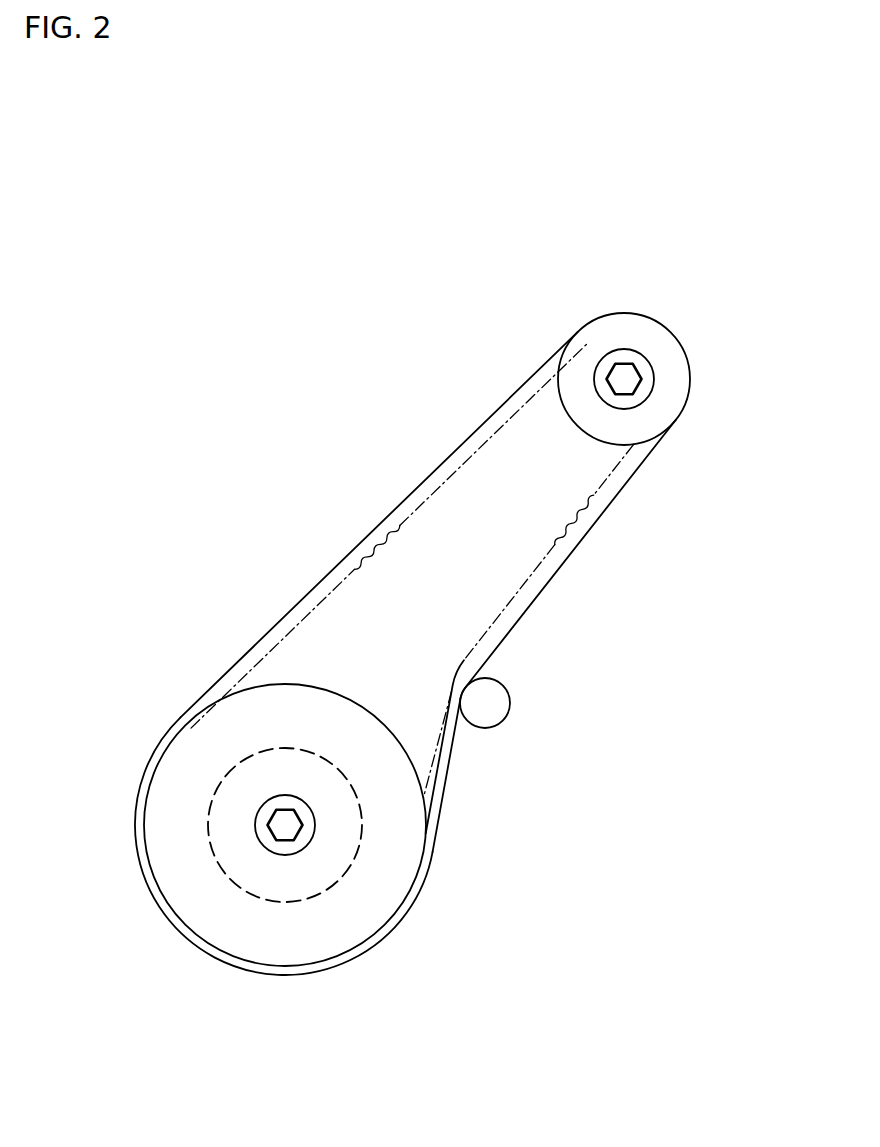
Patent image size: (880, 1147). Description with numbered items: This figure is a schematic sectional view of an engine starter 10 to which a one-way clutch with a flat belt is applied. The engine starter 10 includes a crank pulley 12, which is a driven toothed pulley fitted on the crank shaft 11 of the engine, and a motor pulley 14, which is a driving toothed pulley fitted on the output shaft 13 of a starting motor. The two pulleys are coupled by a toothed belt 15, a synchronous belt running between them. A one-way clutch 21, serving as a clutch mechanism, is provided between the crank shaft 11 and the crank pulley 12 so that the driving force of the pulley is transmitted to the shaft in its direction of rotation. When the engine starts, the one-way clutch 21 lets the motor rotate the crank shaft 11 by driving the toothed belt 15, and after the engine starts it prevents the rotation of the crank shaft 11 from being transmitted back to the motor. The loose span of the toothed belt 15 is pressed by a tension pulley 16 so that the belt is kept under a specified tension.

The engine starter 10 is at (278, 462).
The crank shaft 11 is at (310, 845).
The crank pulley 12 is at (327, 684).
The output shaft 13 is at (632, 362).
The motor pulley 14 is at (562, 418).
The toothed belt 15 is at (582, 547).
The tension pulley 16 is at (510, 712).
The one-way clutch 21 is at (208, 817).